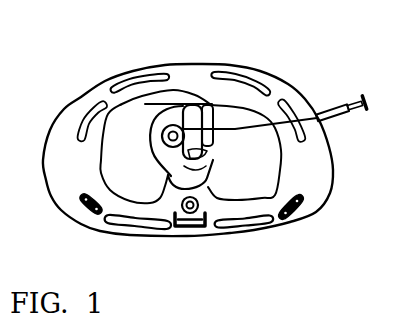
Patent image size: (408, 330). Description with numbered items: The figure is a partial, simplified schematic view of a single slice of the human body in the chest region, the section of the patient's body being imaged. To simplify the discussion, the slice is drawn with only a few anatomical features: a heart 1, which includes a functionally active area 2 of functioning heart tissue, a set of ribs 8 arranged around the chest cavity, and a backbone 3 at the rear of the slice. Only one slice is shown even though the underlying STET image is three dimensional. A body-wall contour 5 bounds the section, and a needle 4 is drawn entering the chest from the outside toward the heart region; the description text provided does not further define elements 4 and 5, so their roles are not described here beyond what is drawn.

The heart 1 is at (155, 126).
The functionally active area 2 is at (168, 126).
The backbone 3 is at (189, 236).
The needle 4 is at (333, 122).
The thorax wall 5 is at (264, 67).
The ribs 8 is at (85, 208).